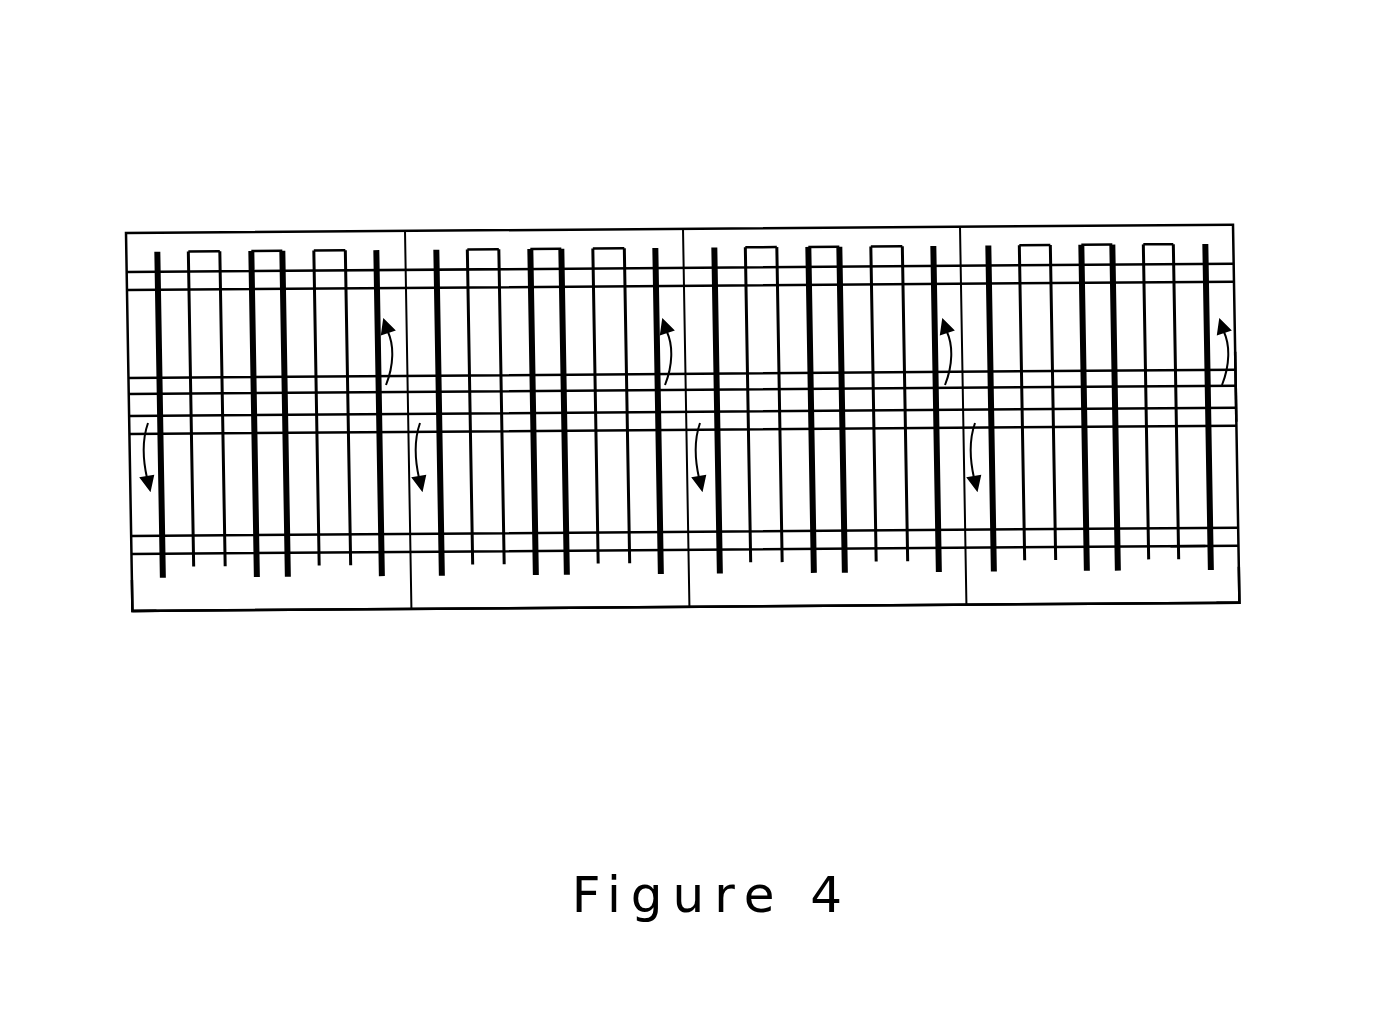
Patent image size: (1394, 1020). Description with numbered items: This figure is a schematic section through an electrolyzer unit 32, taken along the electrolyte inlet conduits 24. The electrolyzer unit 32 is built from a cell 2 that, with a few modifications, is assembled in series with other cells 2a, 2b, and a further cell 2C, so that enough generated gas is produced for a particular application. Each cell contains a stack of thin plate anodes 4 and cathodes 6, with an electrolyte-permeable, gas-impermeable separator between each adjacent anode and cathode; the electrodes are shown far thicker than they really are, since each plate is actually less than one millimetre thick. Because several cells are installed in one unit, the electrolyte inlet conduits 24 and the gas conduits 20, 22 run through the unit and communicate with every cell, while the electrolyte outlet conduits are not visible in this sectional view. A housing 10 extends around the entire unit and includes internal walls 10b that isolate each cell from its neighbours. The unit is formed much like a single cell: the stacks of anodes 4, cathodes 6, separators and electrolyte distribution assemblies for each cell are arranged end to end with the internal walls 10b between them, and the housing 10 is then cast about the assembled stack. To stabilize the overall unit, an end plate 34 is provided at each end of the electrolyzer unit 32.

The housing 10 is at (133, 265).
The cell 2 is at (297, 471).
The cell 2a is at (632, 262).
The cell 2b is at (912, 258).
The fourth panel section 2C is at (1192, 238).
The internal wall 10b is at (408, 252).
The cathode 6 is at (163, 578).
The anode 4 is at (194, 567).
The gas conduit 20 is at (1125, 270).
The electrolyte inlet conduit 24 is at (1237, 413).
The end plate 34 is at (132, 588).
The electrolyzer unit 32 is at (580, 608).
The gas conduit 22 is at (1182, 543).